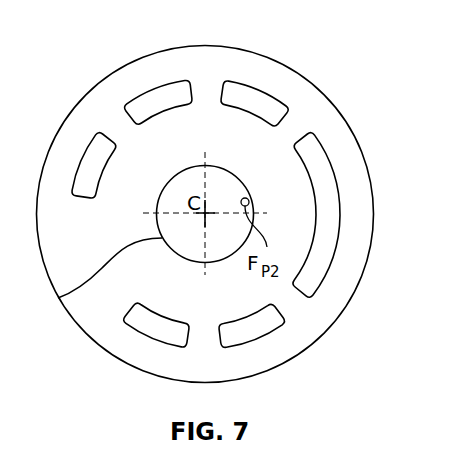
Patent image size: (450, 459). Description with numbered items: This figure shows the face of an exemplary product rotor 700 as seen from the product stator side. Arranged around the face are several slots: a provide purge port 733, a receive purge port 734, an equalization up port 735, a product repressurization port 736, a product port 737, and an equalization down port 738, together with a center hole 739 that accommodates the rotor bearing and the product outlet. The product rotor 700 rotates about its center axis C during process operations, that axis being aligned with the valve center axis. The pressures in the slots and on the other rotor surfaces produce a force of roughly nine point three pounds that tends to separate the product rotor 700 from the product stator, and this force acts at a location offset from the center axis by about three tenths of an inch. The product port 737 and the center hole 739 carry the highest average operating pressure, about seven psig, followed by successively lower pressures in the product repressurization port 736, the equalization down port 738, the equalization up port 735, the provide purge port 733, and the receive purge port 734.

The product rotor 700 is at (292, 68).
The provide purge port 733 is at (162, 347).
The receive purge port 734 is at (82, 157).
The equalization up port 735 is at (147, 92).
The product repressurization port 736 is at (245, 82).
The product port 737 is at (332, 167).
The equalization down port 738 is at (248, 343).
The center hole 739 is at (58, 298).